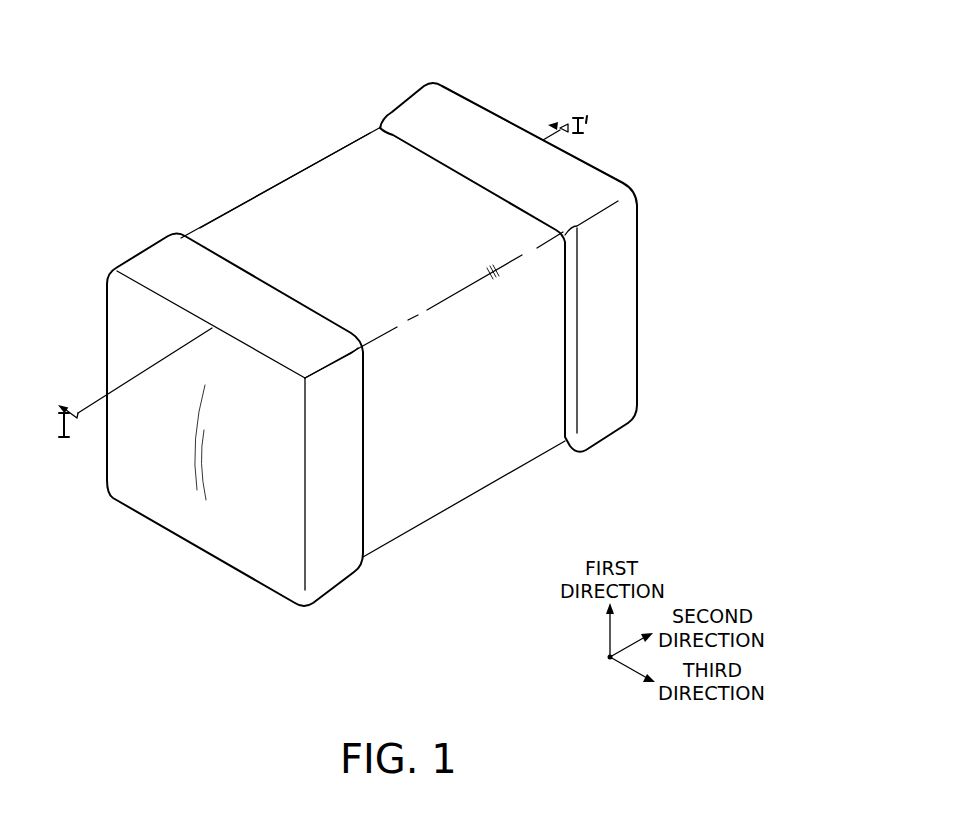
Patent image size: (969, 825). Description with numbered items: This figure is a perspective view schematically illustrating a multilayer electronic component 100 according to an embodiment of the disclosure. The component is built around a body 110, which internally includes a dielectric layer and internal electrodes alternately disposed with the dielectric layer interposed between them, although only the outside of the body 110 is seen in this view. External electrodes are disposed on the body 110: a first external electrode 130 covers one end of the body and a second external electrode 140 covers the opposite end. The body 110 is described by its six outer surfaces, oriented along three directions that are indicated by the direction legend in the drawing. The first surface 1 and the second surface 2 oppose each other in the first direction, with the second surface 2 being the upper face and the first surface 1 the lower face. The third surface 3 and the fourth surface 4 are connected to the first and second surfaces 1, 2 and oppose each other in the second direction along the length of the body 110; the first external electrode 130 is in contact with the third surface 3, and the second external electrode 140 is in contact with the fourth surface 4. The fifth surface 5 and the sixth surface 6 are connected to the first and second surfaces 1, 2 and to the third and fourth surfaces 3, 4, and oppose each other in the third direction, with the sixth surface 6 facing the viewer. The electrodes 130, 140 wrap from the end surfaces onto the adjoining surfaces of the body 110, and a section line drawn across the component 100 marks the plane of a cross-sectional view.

The multilayer electronic component 100 is at (227, 24).
The body 110 is at (307, 184).
The first external electrode 130 is at (145, 251).
The second external electrode 140 is at (421, 90).
The first surface 1 is at (413, 536).
The second surface 2 is at (357, 161).
The third surface 3 is at (163, 497).
The fourth surface 4 is at (523, 124).
The fifth surface 5 is at (223, 216).
The sixth surface 6 is at (447, 486).